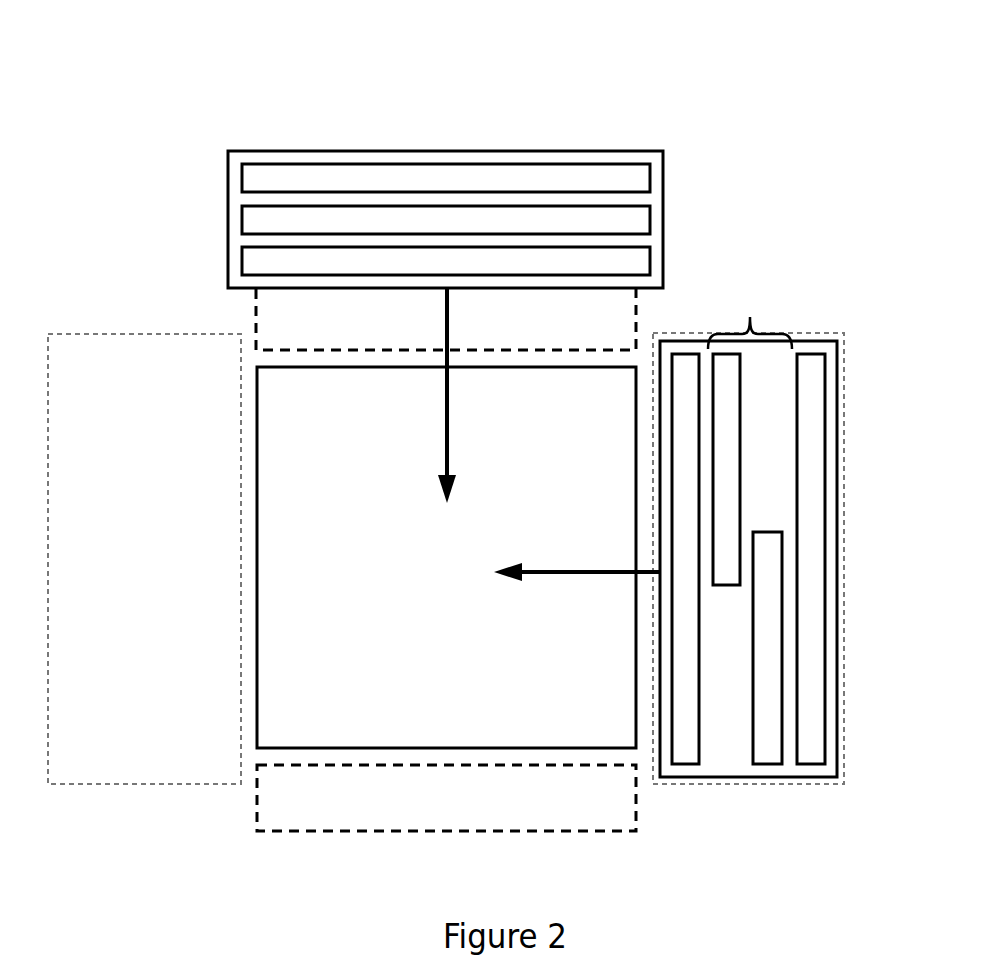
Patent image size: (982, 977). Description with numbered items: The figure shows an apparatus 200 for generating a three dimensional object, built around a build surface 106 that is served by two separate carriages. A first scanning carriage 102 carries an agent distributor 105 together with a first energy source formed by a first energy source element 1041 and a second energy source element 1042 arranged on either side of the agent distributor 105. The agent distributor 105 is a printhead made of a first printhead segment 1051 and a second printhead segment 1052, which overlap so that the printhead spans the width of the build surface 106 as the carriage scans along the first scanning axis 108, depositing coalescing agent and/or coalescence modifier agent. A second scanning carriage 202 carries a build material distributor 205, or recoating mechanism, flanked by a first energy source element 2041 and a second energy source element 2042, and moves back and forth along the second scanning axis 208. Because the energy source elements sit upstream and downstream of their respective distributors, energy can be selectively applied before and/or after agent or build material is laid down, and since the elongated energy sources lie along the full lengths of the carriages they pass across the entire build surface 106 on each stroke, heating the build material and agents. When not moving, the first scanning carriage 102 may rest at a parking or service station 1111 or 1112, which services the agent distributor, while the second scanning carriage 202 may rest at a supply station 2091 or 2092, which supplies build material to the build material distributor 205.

The apparatus 200 is at (838, 46).
The second scanning carriage 202 is at (254, 150).
The first energy source element 2041 is at (255, 178).
The second energy source element 2042 is at (256, 262).
The build material distributor 205 is at (265, 219).
The supply station 2091 is at (256, 312).
The supply station 2092 is at (256, 818).
The build surface 106 is at (286, 612).
The parking station or service station 1111 is at (70, 333).
The parking station or service station 1112 is at (837, 333).
The first scanning carriage 102 is at (689, 340).
The agent distributor 105 is at (750, 317).
The first energy source element 1041 is at (812, 748).
The second energy source element 1042 is at (685, 748).
The first printhead segment 1051 is at (731, 587).
The second printhead segment 1052 is at (762, 531).
The second scanning axis 208 is at (445, 432).
The first scanning axis 108 is at (561, 574).